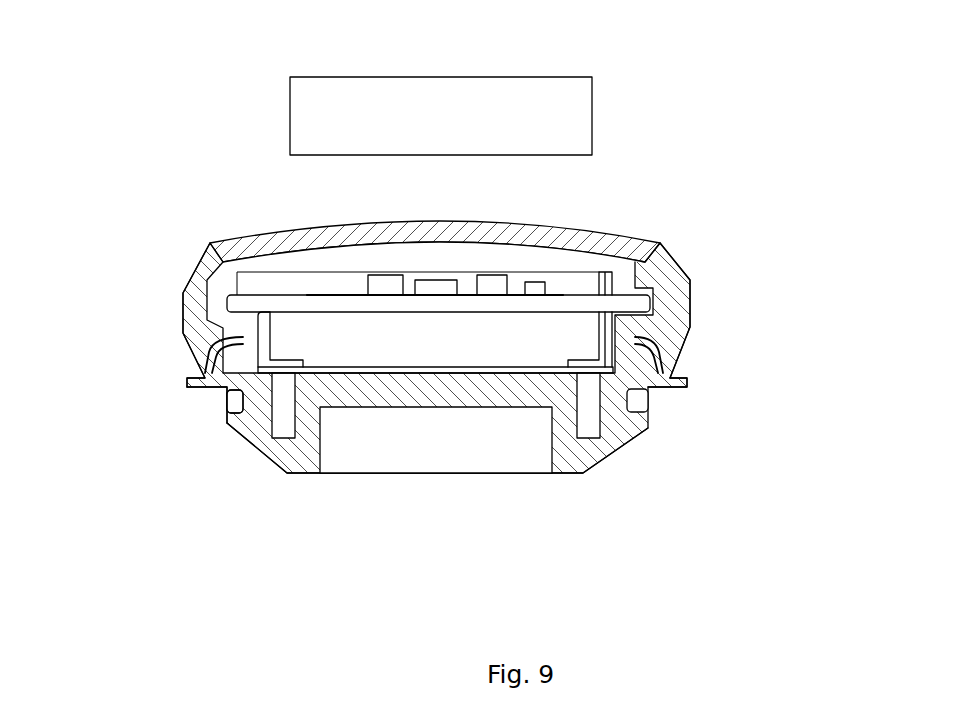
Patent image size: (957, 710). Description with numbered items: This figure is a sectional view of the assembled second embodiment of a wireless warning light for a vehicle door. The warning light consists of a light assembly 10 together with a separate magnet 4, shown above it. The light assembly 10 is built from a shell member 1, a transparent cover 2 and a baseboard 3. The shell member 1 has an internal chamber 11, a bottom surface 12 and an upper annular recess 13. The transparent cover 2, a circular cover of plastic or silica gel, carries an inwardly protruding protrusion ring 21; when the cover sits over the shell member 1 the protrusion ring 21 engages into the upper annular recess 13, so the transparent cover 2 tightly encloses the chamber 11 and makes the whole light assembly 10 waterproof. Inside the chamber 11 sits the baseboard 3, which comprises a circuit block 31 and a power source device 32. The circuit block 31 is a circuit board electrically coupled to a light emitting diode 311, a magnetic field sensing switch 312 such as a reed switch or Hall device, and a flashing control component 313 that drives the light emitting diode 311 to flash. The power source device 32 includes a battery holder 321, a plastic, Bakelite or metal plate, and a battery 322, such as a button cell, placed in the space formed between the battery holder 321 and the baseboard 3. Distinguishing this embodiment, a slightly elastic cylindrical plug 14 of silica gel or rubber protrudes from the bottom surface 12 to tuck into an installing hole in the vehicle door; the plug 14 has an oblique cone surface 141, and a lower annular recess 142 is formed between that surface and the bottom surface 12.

The light assembly 10 is at (247, 127).
The shell member 1 is at (685, 385).
The chamber 11 is at (620, 278).
The bottom surface 12 is at (650, 387).
The upper annular recess 13 is at (638, 336).
The plug 14 is at (227, 417).
The oblique cone surface 141 is at (260, 457).
The lower annular recess 142 is at (230, 390).
The transparent cover 2 is at (660, 242).
The protrusion ring 21 is at (652, 332).
The baseboard 3 is at (247, 303).
The circuit block 31 is at (337, 297).
The light emitting diode 311 is at (427, 285).
The magnetic field sensing switch 312 is at (383, 282).
The flashing control component 313 is at (540, 285).
The power source device 32 is at (267, 328).
The battery holder 321 is at (237, 395).
The battery 322 is at (447, 350).
The magnet 4 is at (578, 102).